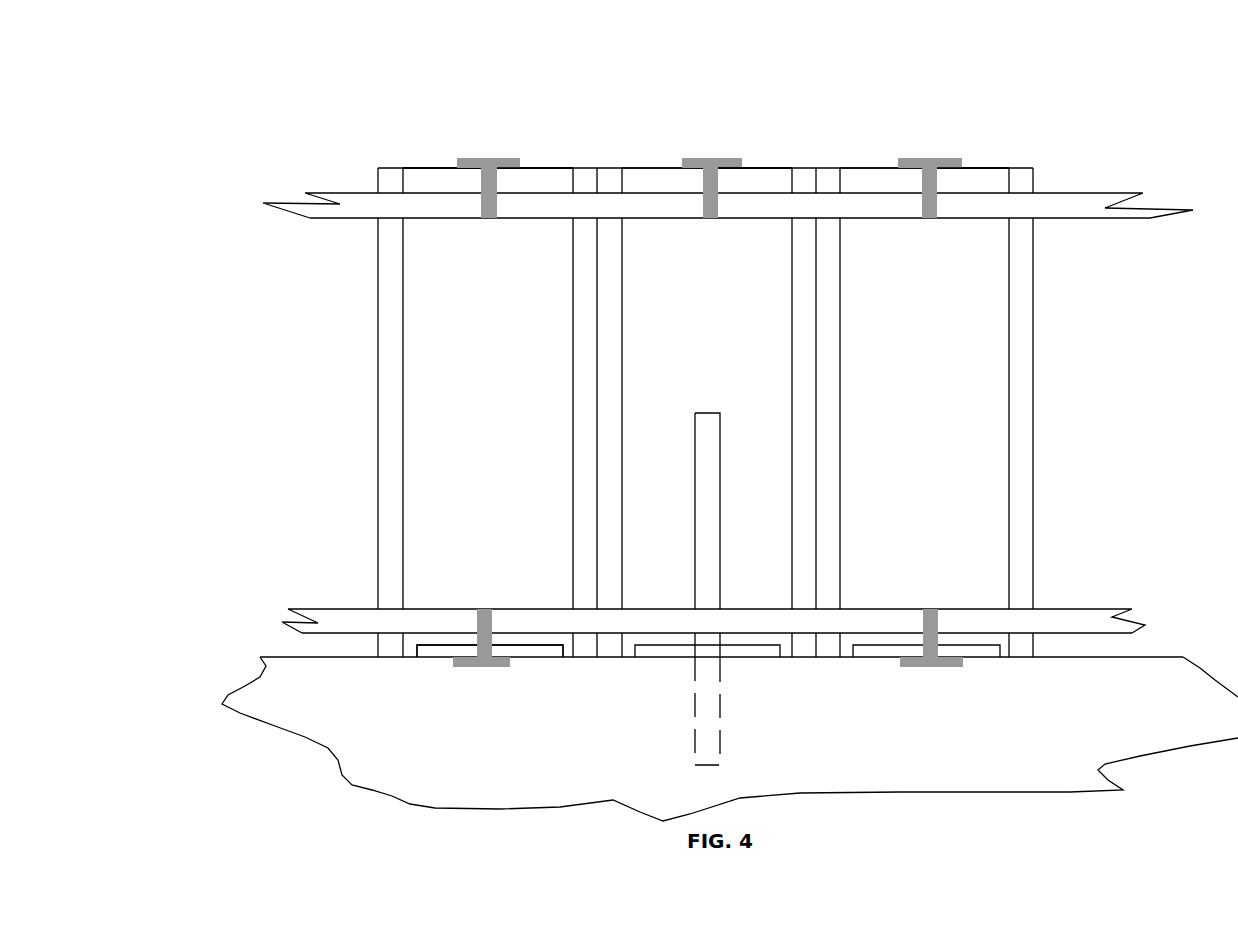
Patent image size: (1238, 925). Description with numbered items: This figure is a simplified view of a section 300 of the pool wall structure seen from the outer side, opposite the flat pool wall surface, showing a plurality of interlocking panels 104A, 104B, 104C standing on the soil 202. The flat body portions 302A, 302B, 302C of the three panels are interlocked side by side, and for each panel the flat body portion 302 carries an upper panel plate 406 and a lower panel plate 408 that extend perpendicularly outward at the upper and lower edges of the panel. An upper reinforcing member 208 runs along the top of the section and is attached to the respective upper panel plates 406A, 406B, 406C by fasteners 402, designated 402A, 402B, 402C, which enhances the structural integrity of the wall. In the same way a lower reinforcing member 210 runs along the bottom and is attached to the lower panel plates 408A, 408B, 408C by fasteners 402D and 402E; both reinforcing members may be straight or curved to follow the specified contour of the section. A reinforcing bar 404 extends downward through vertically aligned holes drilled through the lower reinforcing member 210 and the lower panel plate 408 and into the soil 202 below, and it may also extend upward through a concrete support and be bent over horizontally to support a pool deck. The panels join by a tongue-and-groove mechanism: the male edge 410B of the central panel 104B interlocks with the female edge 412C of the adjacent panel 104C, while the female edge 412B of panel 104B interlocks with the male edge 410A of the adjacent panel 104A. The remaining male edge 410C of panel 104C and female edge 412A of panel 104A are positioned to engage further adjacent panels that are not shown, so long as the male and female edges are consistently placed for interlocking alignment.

The interlocking panel 104A is at (921, 119).
The interlocking panel 104B is at (693, 118).
The interlocking panel 104C is at (485, 103).
The soil 202 is at (730, 739).
The upper reinforcing member 208 is at (1073, 205).
The lower reinforcing member 210 is at (1070, 622).
The section of the pool wall structure 300 is at (321, 313).
The flat body portion 302 is at (480, 413).
The flat body portion 302A is at (924, 272).
The flat body portion 302B is at (707, 272).
The flat body portion 302C is at (488, 272).
The fastener 402 is at (500, 152).
The fastener 402A is at (930, 160).
The fastener 402B is at (708, 158).
The fastener 402C is at (483, 160).
The fastener 402D is at (483, 664).
The fastener 402E is at (932, 668).
The reinforcing bar 404 is at (707, 547).
The upper panel plate 406 is at (752, 186).
The upper panel plate 406A is at (985, 178).
The upper panel plate 406B is at (765, 184).
The upper panel plate 406C is at (525, 180).
The lower panel plate 408 is at (537, 655).
The lower panel plate 408A is at (890, 652).
The lower panel plate 408B is at (672, 652).
The lower panel plate 408C is at (437, 652).
The male edge 410A is at (830, 475).
The male edge 410B is at (603, 507).
The male edge 410C is at (392, 560).
The female edge 412A is at (1022, 497).
The female edge 412B is at (805, 328).
The female edge 412C is at (587, 498).